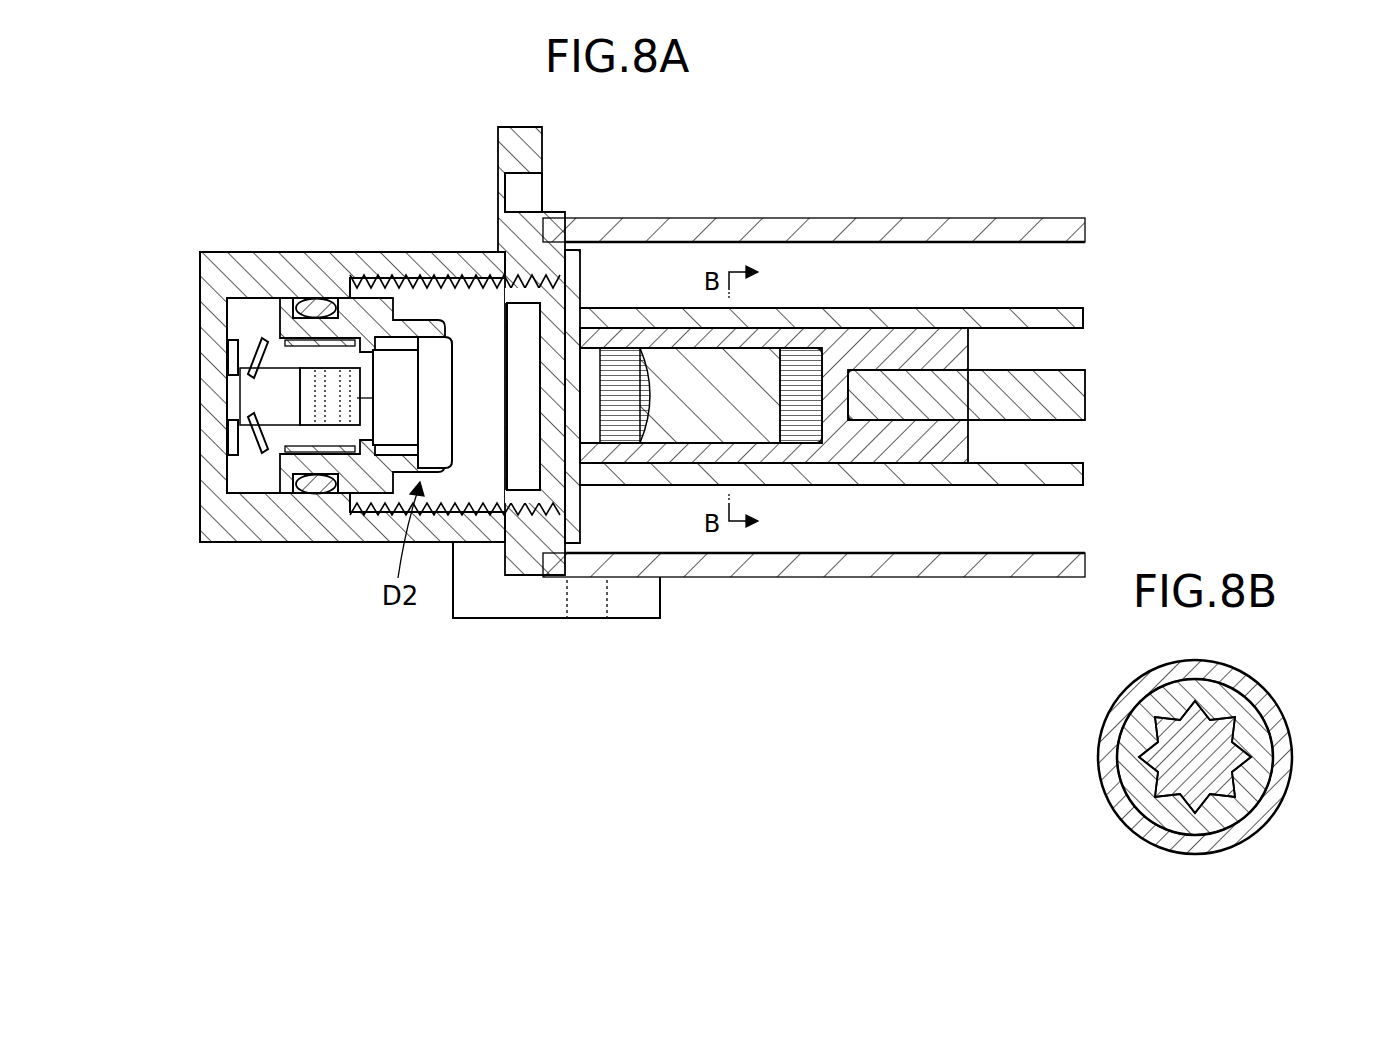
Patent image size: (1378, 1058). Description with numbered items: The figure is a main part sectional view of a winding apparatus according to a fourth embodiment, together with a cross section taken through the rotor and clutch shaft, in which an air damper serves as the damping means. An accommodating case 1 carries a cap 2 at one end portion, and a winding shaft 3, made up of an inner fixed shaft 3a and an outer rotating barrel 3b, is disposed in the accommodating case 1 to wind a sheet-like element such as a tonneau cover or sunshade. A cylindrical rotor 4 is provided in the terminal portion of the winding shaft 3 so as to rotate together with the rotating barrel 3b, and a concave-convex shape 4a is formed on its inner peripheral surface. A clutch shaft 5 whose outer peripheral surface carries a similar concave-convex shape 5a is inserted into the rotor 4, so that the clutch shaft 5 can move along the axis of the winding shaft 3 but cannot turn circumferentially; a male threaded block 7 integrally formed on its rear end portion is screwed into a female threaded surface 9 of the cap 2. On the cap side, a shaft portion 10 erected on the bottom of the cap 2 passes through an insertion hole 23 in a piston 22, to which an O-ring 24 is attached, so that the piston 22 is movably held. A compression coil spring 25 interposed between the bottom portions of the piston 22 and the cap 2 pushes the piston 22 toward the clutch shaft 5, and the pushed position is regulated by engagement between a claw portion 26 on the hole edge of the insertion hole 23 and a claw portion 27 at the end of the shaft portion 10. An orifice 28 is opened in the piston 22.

In FIG. 8A, the accommodating case 1 is at (877, 222).
In FIG. 8A, the cap 2 is at (258, 535).
In FIG. 8A, the winding shaft 3 is at (957, 296).
In FIG. 8A, the inner fixed shaft 3a is at (1073, 398).
In FIG. 8A, the outer rotating barrel 3b is at (1083, 316).
In FIG. 8B, the outer rotating barrel 3b is at (1285, 722).
In FIG. 8A, the cylindrical rotor 4 is at (878, 460).
In FIG. 8B, the cylindrical rotor 4 is at (1130, 735).
In FIG. 8B, the concave-convex shape 4a is at (1140, 770).
In FIG. 8A, the clutch shaft 5 is at (685, 435).
In FIG. 8B, the clutch shaft 5 is at (1177, 778).
In FIG. 8A, the concave-convex shape 5a is at (805, 428).
In FIG. 8B, the concave-convex shape 5a is at (1217, 830).
In FIG. 8A, the male threaded block 7 is at (520, 497).
In FIG. 8A, the female threaded surface 9 is at (442, 296).
In FIG. 8A, the shaft portion 10 is at (262, 402).
In FIG. 8A, the piston 22 is at (440, 361).
In FIG. 8A, the insertion hole 23 is at (352, 430).
In FIG. 8A, the O-ring 24 is at (318, 300).
In FIG. 8A, the compression coil spring 25 is at (237, 330).
In FIG. 8A, the claw portion 26 is at (265, 372).
In FIG. 8A, the claw portion 27 is at (280, 420).
In FIG. 8A, the orifice 28 is at (373, 398).